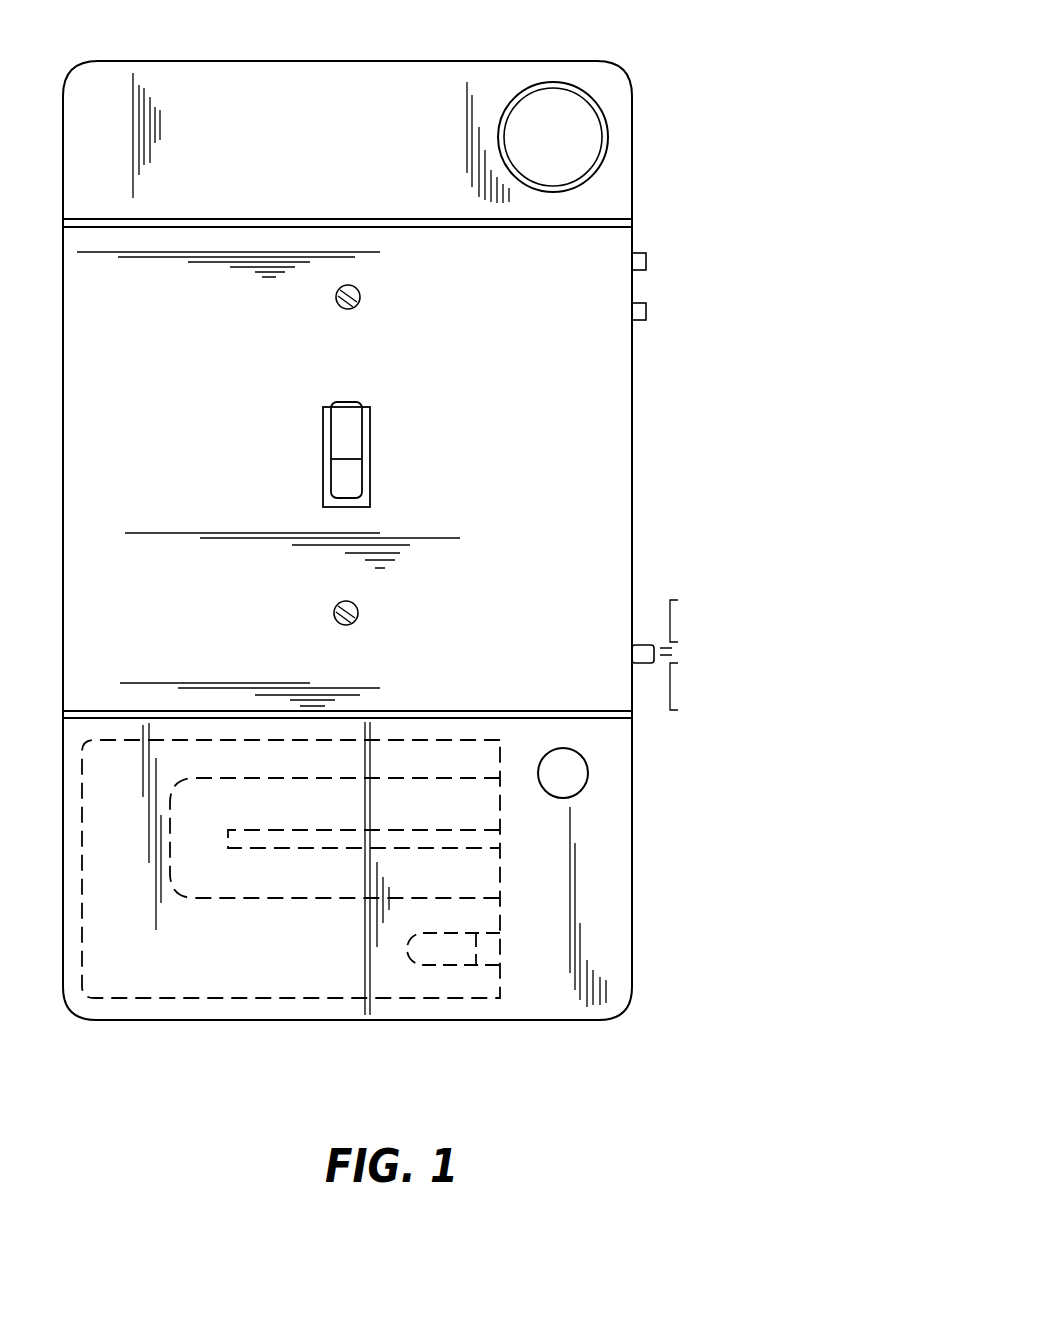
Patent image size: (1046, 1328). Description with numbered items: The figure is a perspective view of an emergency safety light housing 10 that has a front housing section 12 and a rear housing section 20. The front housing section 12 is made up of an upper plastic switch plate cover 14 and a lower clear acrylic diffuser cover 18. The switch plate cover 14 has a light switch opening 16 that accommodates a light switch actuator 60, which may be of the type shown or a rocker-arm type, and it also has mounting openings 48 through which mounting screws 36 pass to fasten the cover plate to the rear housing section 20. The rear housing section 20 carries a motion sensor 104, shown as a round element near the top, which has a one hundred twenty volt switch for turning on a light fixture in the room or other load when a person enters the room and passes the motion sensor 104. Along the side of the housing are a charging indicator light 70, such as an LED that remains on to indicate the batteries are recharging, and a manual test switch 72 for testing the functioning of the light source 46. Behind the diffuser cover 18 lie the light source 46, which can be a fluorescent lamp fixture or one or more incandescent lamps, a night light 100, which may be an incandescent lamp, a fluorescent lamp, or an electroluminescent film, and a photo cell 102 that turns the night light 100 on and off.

The emergency safety light housing 10 is at (467, 553).
The front housing section 12 is at (471, 118).
The switch plate cover 14 is at (479, 491).
The light switch opening 16 is at (346, 454).
The diffuser cover 18 is at (460, 905).
The rear housing section 20 is at (640, 394).
The mounting screws 36 is at (356, 466).
The mounting openings 48 is at (358, 289).
The light switch actuator 60 is at (340, 475).
The charging indicator light 70 is at (646, 262).
The manual test switch 72 is at (640, 320).
The motion sensor 104 is at (592, 130).
The photo cell 102 is at (603, 802).
The light source 46 is at (492, 876).
The night light 100 is at (428, 972).